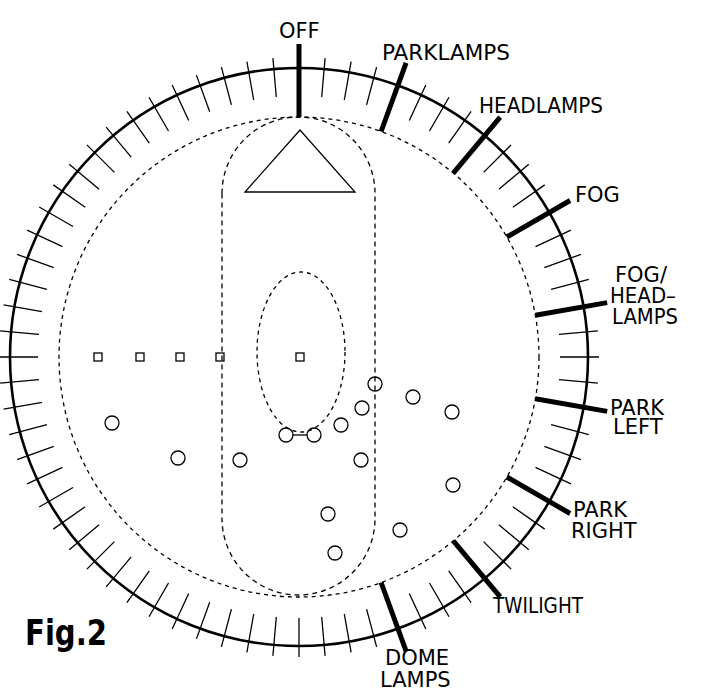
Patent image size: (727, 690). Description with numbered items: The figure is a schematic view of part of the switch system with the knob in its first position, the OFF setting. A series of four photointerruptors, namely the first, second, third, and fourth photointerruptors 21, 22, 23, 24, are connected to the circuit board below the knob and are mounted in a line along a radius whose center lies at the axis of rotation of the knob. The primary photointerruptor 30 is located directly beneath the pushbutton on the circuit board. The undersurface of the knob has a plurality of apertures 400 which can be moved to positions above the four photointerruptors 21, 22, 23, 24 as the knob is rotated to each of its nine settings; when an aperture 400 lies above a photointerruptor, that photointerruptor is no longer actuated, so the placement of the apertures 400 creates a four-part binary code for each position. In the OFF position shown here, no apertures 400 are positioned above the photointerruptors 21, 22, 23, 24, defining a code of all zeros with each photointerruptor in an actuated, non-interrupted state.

The first photointerruptor 21 is at (98, 352).
The second photointerruptor 22 is at (140, 352).
The third photointerruptor 23 is at (180, 352).
The fourth photointerruptor 24 is at (220, 352).
The primary photointerruptor 30 is at (296, 355).
The apertures 400 is at (459, 411).